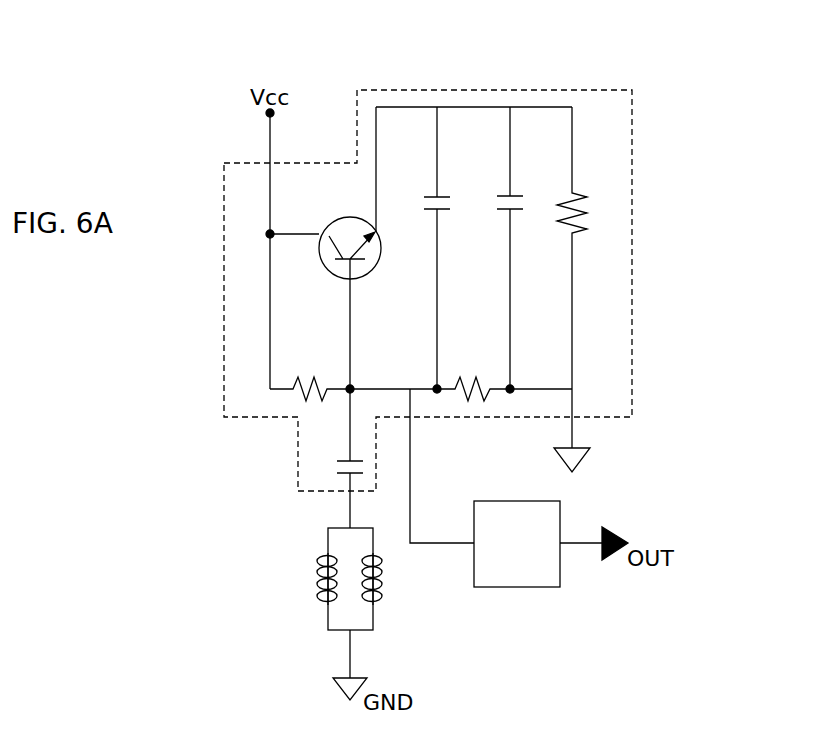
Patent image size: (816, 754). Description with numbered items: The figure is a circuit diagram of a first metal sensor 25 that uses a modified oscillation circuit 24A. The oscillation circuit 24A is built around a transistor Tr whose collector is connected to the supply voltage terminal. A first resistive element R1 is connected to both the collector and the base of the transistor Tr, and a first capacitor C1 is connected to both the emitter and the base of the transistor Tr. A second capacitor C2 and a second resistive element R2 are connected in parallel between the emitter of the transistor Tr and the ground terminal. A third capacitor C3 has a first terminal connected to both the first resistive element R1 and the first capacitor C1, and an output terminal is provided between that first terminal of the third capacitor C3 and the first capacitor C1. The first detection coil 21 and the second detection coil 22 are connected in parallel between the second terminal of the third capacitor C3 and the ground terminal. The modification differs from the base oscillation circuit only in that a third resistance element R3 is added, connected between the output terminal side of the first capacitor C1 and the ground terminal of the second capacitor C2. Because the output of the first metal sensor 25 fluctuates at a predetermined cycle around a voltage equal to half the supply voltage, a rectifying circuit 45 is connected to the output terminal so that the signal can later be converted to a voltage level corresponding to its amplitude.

The first metal sensor 25 is at (366, 77).
The oscillation circuit 24A is at (552, 281).
The first detection coil 21 is at (317, 585).
The second detection coil 22 is at (383, 583).
The rectifying circuit 45 is at (562, 570).
The transistor Tr is at (338, 222).
The first resistive element R1 is at (315, 376).
The second resistive element R2 is at (576, 201).
The third resistance element R3 is at (478, 376).
The first capacitor C1 is at (445, 211).
The second capacitor C2 is at (510, 196).
The third capacitor C3 is at (345, 460).